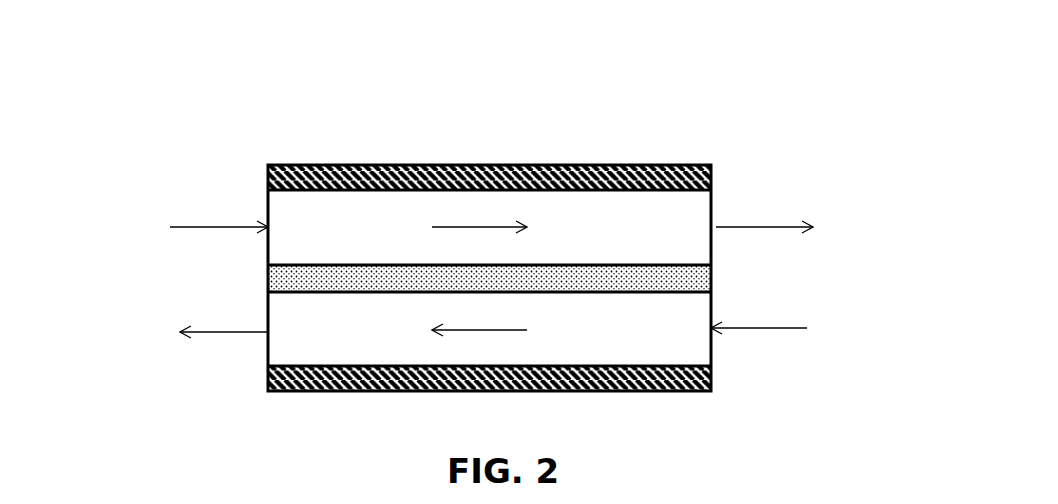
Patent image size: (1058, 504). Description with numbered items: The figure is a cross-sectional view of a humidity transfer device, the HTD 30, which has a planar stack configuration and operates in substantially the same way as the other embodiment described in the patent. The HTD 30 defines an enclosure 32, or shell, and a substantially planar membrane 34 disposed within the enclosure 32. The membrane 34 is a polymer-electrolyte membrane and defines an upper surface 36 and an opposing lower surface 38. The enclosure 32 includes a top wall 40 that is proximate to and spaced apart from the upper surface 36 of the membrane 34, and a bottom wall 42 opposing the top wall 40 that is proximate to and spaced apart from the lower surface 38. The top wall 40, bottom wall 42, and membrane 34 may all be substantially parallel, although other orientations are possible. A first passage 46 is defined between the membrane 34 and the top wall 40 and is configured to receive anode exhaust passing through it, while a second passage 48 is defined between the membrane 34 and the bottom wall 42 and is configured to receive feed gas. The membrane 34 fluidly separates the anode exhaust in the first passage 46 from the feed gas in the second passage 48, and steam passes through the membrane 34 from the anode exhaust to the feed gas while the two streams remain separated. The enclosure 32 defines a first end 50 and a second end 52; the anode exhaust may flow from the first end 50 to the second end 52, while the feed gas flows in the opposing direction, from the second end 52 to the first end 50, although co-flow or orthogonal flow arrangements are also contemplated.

The HTD 30 is at (473, 233).
The enclosure 32 is at (485, 165).
The membrane 34 is at (548, 274).
The upper surface 36 is at (355, 263).
The lower surface 38 is at (355, 294).
The top wall 40 is at (355, 181).
The bottom wall 42 is at (618, 392).
The first passage 46 is at (615, 243).
The second passage 48 is at (668, 342).
The first end 50 is at (713, 207).
The second end 52 is at (268, 210).